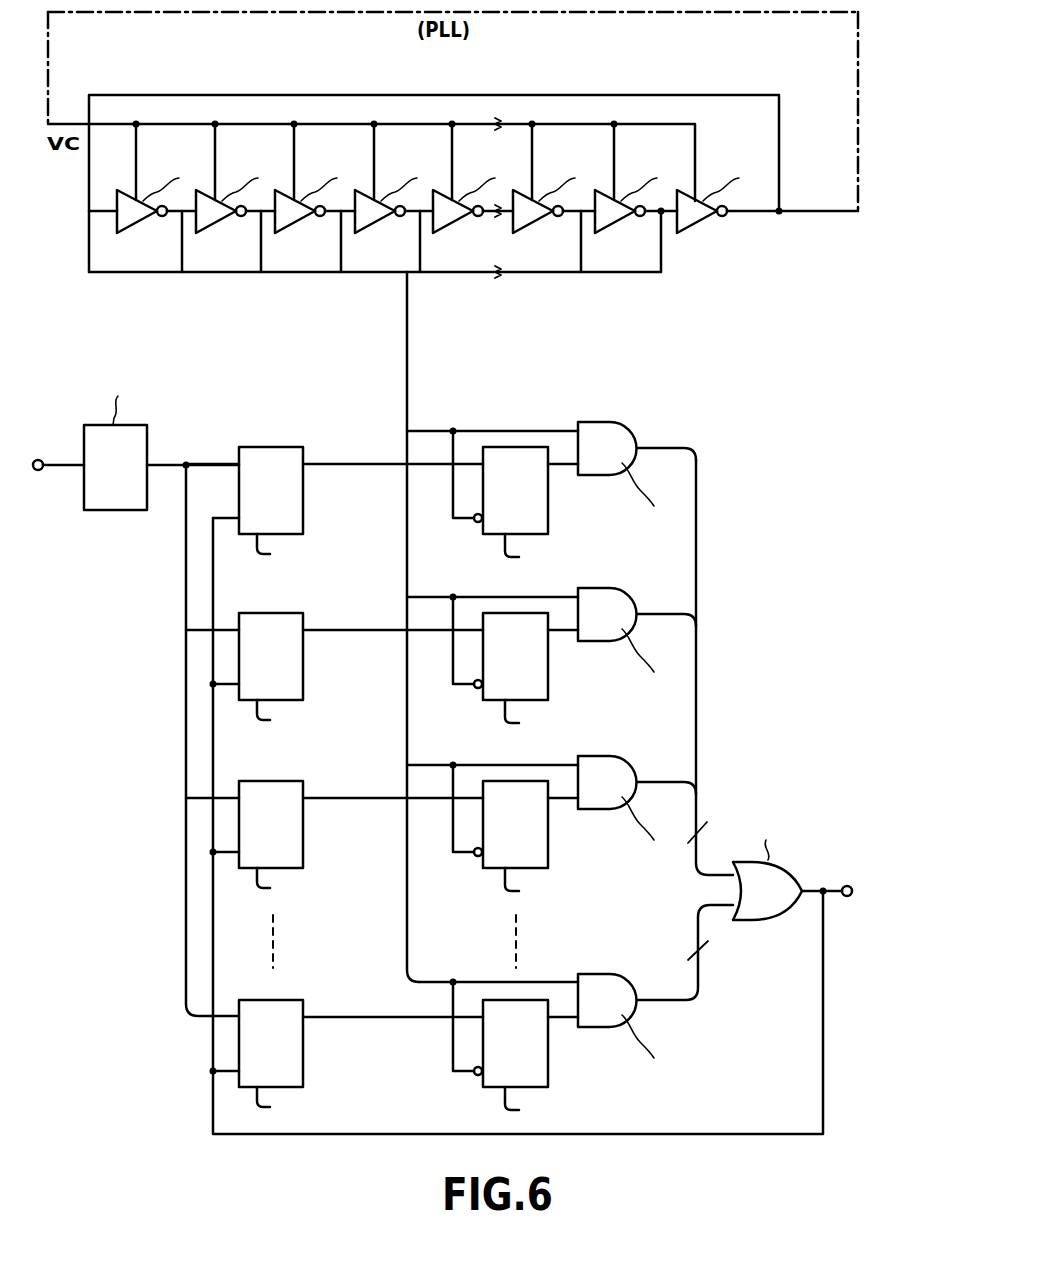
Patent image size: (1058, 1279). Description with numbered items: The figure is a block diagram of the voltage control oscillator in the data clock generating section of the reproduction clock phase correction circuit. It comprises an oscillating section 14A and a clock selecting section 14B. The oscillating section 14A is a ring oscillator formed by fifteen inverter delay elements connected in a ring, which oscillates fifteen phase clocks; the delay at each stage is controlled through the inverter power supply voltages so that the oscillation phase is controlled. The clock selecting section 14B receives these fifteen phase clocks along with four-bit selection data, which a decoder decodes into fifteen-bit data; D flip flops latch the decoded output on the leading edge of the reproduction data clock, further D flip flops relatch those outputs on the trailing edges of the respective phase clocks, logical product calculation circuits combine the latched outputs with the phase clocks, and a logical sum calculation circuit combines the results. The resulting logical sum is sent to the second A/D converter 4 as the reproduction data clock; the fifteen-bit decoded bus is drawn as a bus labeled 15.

The oscillating section 14A is at (285, 300).
The clock selecting section 14B is at (452, 748).
The second A/D converter 4 is at (58, 473).
The 15-bit decoded select bus 15 is at (162, 473).